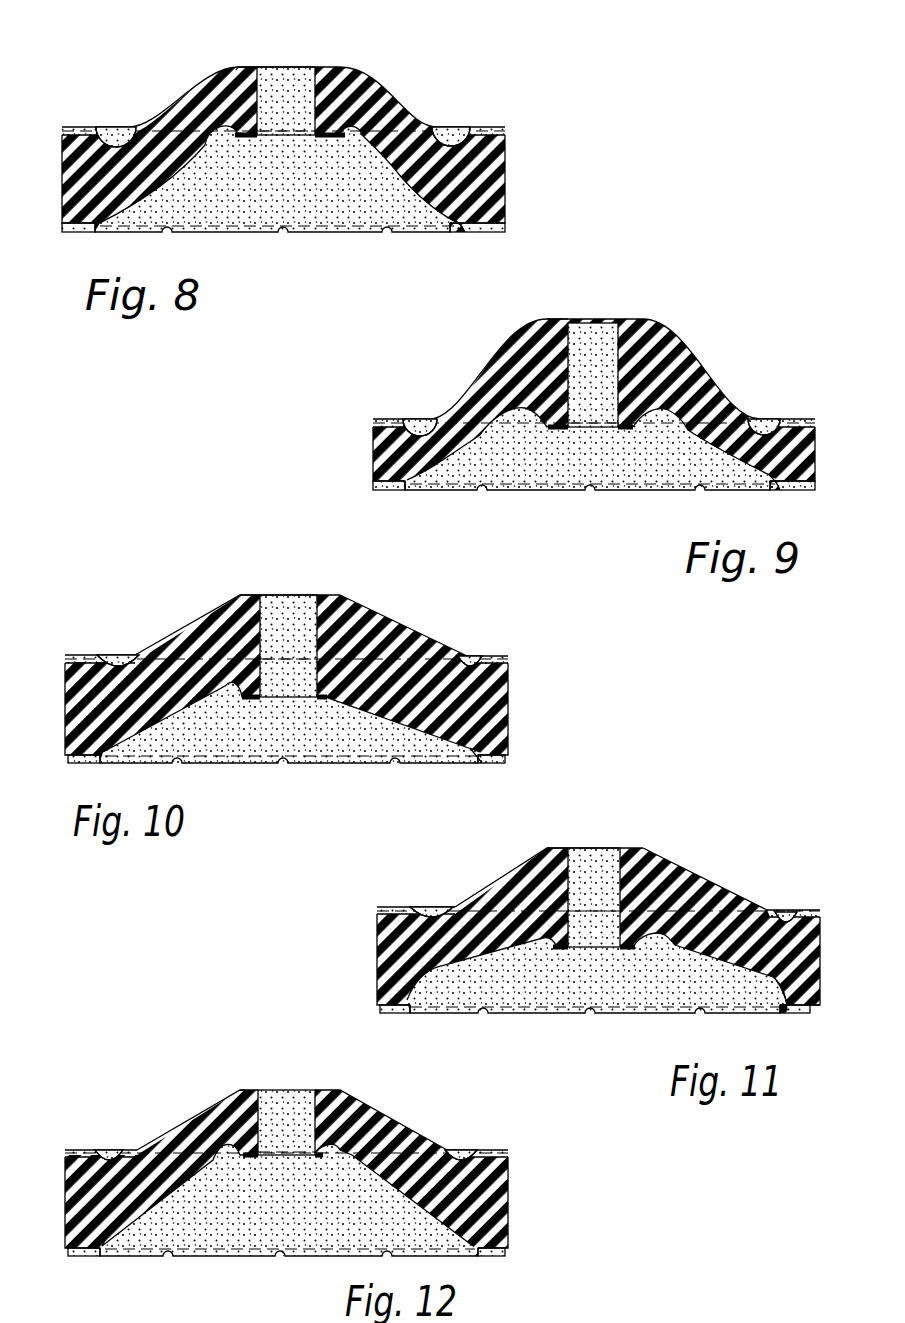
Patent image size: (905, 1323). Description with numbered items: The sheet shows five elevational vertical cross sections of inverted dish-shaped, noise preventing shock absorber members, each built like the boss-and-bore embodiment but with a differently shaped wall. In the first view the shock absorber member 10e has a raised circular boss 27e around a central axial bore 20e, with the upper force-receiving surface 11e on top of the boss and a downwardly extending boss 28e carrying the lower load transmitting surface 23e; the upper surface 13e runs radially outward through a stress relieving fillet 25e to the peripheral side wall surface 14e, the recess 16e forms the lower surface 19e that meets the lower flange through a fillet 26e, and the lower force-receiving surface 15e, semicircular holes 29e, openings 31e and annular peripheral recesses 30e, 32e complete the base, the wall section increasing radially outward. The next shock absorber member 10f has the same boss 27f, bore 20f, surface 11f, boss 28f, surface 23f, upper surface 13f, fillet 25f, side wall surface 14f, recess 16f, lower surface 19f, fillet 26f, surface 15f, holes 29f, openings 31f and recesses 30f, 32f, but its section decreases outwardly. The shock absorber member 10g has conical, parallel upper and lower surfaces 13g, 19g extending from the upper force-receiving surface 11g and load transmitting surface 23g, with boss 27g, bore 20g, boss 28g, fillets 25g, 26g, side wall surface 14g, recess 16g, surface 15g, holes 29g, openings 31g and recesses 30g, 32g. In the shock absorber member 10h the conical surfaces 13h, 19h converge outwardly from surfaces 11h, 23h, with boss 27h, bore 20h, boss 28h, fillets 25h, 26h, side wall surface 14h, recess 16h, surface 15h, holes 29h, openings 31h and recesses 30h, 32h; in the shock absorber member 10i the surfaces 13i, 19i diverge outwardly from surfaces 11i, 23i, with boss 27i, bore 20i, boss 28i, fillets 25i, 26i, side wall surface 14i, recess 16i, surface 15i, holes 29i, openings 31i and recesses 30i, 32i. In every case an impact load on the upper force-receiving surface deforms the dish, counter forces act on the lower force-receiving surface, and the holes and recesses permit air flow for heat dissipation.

In FIG. 8, the shock absorber member 10e is at (188, 98).
In FIG. 8, the upper force-receiving surface 11e is at (325, 64).
In FIG. 8, the upper surface 13e is at (388, 104).
In FIG. 8, the peripheral side wall surface 14e is at (505, 186).
In FIG. 8, the lower force-receiving surface 15e is at (490, 232).
In FIG. 8, the recess 16e is at (345, 205).
In FIG. 8, the lower surface 19e is at (385, 152).
In FIG. 8, the central axial bore 20e is at (312, 86).
In FIG. 8, the lower load transmitting surface 23e is at (256, 138).
In FIG. 8, the stress relieving fillet 25e is at (458, 140).
In FIG. 8, the stress relieving fillet 26e is at (456, 218).
In FIG. 8, the raised circular boss 27e is at (242, 69).
In FIG. 8, the downwardly extending boss 28e is at (224, 140).
In FIG. 8, the semicircular holes 29e is at (80, 232).
In FIG. 8, the annular peripheral recess 30e is at (62, 229).
In FIG. 8, the openings 31e is at (80, 126).
In FIG. 8, the annular peripheral recess 32e is at (505, 129).
In FIG. 9, the shock absorber member 10f is at (461, 381).
In FIG. 9, the upper force-receiving surface 11f is at (638, 324).
In FIG. 9, the upper surface 13f is at (697, 372).
In FIG. 9, the peripheral side wall surface 14f is at (815, 462).
In FIG. 9, the lower force-receiving surface 15f is at (503, 491).
In FIG. 9, the recess 16f is at (545, 463).
In FIG. 9, the lower surface 19f is at (700, 447).
In FIG. 9, the central axial bore 20f is at (616, 352).
In FIG. 9, the lower load transmitting surface 23f is at (553, 431).
In FIG. 9, the stress relieving fillet 25f is at (770, 428).
In FIG. 9, the stress relieving fillet 26f is at (785, 481).
In FIG. 9, the raised circular boss 27f is at (548, 332).
In FIG. 9, the downwardly extending boss 28f is at (530, 415).
In FIG. 9, the semicircular holes 29f is at (393, 491).
In FIG. 9, the annular peripheral recess 30f is at (815, 490).
In FIG. 9, the openings 31f is at (398, 418).
In FIG. 9, the annular peripheral recess 32f is at (815, 421).
In FIG. 10, the shock absorber member 10g is at (185, 624).
In FIG. 10, the upper force-receiving surface 11g is at (328, 600).
In FIG. 10, the upper surface 13g is at (383, 636).
In FIG. 10, the peripheral side wall surface 14g is at (510, 708).
In FIG. 10, the lower force-receiving surface 15g is at (490, 765).
In FIG. 10, the recess 16g is at (355, 748).
In FIG. 10, the lower surface 19g is at (402, 713).
In FIG. 10, the central axial bore 20g is at (303, 620).
In FIG. 10, the upper load transmitting surface 23g is at (258, 698).
In FIG. 10, the stress relieving fillet 25g is at (468, 662).
In FIG. 10, the stress relieving fillet 26g is at (470, 755).
In FIG. 10, the raised circular boss 27g is at (240, 596).
In FIG. 10, the downwardly extending boss 28g is at (227, 689).
In FIG. 10, the semicircular holes 29g is at (92, 763).
In FIG. 10, the annular peripheral recess 30g is at (66, 759).
In FIG. 10, the openings 31g is at (86, 653).
In FIG. 10, the annular peripheral recess 32g is at (508, 659).
In FIG. 11, the shock absorber member 10h is at (487, 875).
In FIG. 11, the upper force-receiving surface 11h is at (640, 850).
In FIG. 11, the upper surface 13h is at (688, 885).
In FIG. 11, the peripheral side wall surface 14h is at (820, 962).
In FIG. 11, the lower force-receiving surface 15h is at (820, 1015).
In FIG. 11, the recess 16h is at (545, 993).
In FIG. 11, the lower surface 19h is at (727, 968).
In FIG. 11, the central axial bore 20h is at (617, 865).
In FIG. 11, the lower load transmitting surface 23h is at (558, 950).
In FIG. 11, the stress relieving fillet 25h is at (785, 914).
In FIG. 11, the stress relieving fillet 26h is at (775, 985).
In FIG. 11, the raised circular boss 27h is at (548, 850).
In FIG. 11, the downwardly extending boss 28h is at (548, 948).
In FIG. 11, the semicircular holes 29h is at (396, 1015).
In FIG. 11, the annular peripheral recess 30h is at (377, 1010).
In FIG. 11, the openings 31h is at (400, 907).
In FIG. 11, the annular peripheral recess 32h is at (820, 911).
In FIG. 12, the shock absorber member 10i is at (189, 1110).
In FIG. 12, the upper force-receiving surface 11i is at (250, 1088).
In FIG. 12, the upper surface 13i is at (385, 1127).
In FIG. 12, the peripheral side wall surface 14i is at (528, 1202).
In FIG. 12, the lower force-receiving surface 15i is at (502, 1256).
In FIG. 12, the recess 16i is at (227, 1237).
In FIG. 12, the lower surface 19i is at (415, 1195).
In FIG. 12, the central axial bore 20i is at (305, 1115).
In FIG. 12, the lower load transmitting surface 23i is at (250, 1152).
In FIG. 12, the stress relieving fillet 25i is at (475, 1155).
In FIG. 12, the stress relieving fillet 26i is at (105, 1248).
In FIG. 12, the raised circular boss 27i is at (240, 1091).
In FIG. 12, the downwardly extending boss 28i is at (223, 1150).
In FIG. 12, the semicircular holes 29i is at (78, 1257).
In FIG. 12, the annular peripheral recess 30i is at (66, 1255).
In FIG. 12, the openings 31i is at (85, 1150).
In FIG. 12, the annular peripheral recess 32i is at (508, 1151).